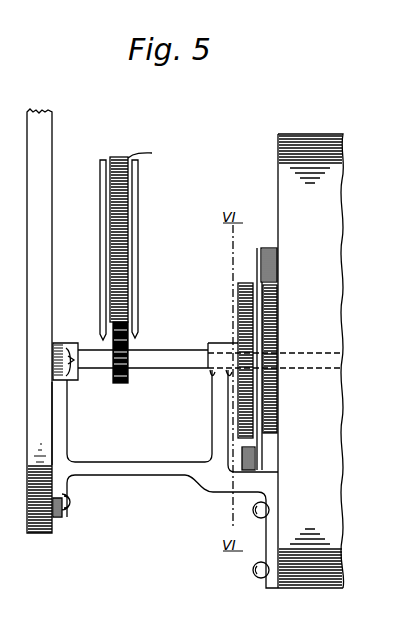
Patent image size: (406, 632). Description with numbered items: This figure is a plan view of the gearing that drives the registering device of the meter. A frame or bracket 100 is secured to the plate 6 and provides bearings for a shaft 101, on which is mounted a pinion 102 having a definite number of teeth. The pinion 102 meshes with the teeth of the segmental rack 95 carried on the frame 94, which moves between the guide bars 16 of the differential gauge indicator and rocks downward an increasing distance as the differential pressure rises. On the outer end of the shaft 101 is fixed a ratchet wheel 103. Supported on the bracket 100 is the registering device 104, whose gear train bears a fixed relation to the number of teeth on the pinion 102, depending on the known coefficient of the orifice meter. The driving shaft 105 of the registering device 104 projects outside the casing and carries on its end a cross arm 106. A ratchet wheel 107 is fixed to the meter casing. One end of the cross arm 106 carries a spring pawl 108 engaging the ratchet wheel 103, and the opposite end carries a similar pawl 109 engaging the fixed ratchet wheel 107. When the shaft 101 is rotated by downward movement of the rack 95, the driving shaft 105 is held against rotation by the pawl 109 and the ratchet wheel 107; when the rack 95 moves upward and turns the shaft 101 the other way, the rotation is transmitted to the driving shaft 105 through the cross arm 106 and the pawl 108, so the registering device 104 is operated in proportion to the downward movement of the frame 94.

The plate 6 is at (27, 296).
The guide bars 16 is at (100, 221).
The frame 94 is at (151, 161).
The segmental rack 95 is at (130, 284).
The frame or bracket 100 is at (150, 477).
The shaft 101 is at (162, 370).
The pinion 102 is at (121, 383).
The ratchet wheel 103 is at (238, 308).
The registering device 104 is at (311, 361).
The driving shaft 105 is at (284, 371).
The cross arm 106 is at (266, 441).
The fixed ratchet wheel 107 is at (274, 327).
The spring pawl 108 is at (252, 462).
The pawl 109 is at (270, 259).